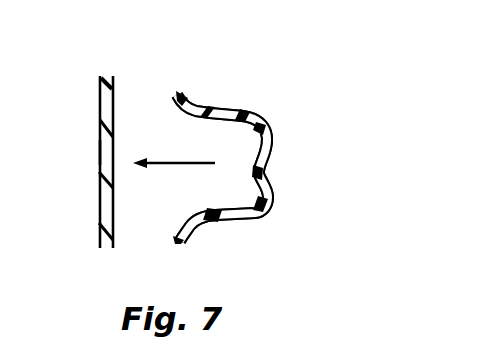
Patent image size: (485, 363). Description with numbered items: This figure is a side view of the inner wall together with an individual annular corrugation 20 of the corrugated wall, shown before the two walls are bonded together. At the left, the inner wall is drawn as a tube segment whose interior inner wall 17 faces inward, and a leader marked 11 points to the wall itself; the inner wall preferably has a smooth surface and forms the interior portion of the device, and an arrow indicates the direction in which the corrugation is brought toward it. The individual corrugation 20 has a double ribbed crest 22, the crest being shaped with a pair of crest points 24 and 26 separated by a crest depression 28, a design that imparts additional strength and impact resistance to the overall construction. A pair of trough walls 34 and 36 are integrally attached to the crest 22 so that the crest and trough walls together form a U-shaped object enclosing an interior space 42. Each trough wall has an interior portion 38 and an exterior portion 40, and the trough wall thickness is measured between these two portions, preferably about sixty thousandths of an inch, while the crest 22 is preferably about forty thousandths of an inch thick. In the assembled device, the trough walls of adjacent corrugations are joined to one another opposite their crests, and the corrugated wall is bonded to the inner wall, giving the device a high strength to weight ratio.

The panel 11 is at (116, 102).
The interior inner wall 17 is at (99, 153).
The individual annular corrugation 20 is at (290, 182).
The double ribbed crest 22 is at (267, 118).
The crest point 24 is at (269, 136).
The crest point 26 is at (267, 210).
The crest depression 28 is at (263, 168).
The trough wall 34 is at (210, 105).
The trough wall 36 is at (238, 216).
The interior portion 38 is at (199, 208).
The exterior portion 40 is at (201, 224).
The interior space 42 is at (218, 182).